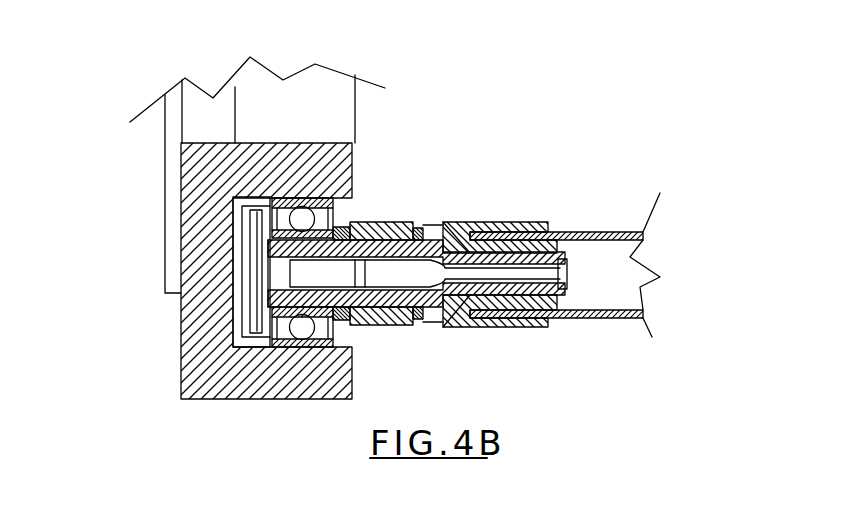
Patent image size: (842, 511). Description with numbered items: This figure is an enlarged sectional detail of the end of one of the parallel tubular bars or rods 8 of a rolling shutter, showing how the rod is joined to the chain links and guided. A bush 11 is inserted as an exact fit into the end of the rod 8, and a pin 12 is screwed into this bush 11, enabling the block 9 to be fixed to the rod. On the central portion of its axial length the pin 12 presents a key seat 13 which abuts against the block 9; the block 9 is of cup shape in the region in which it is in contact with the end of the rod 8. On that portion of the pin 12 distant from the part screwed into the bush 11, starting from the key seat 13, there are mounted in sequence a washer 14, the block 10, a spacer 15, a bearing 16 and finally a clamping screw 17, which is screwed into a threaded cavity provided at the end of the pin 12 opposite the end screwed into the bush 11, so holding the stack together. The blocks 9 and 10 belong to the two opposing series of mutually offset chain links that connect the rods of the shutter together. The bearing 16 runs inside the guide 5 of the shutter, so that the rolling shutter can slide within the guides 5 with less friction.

The guide 5 is at (343, 103).
The tubular bar or rod 8 is at (613, 232).
The block 9 is at (527, 222).
The block 10 is at (398, 220).
The bush 11 is at (565, 320).
The pin 12 is at (563, 267).
The key seat 13 is at (420, 327).
The washer 14 is at (427, 230).
The spacer 15 is at (343, 320).
The bearing 16 is at (281, 345).
The clamping screw 17 is at (253, 293).